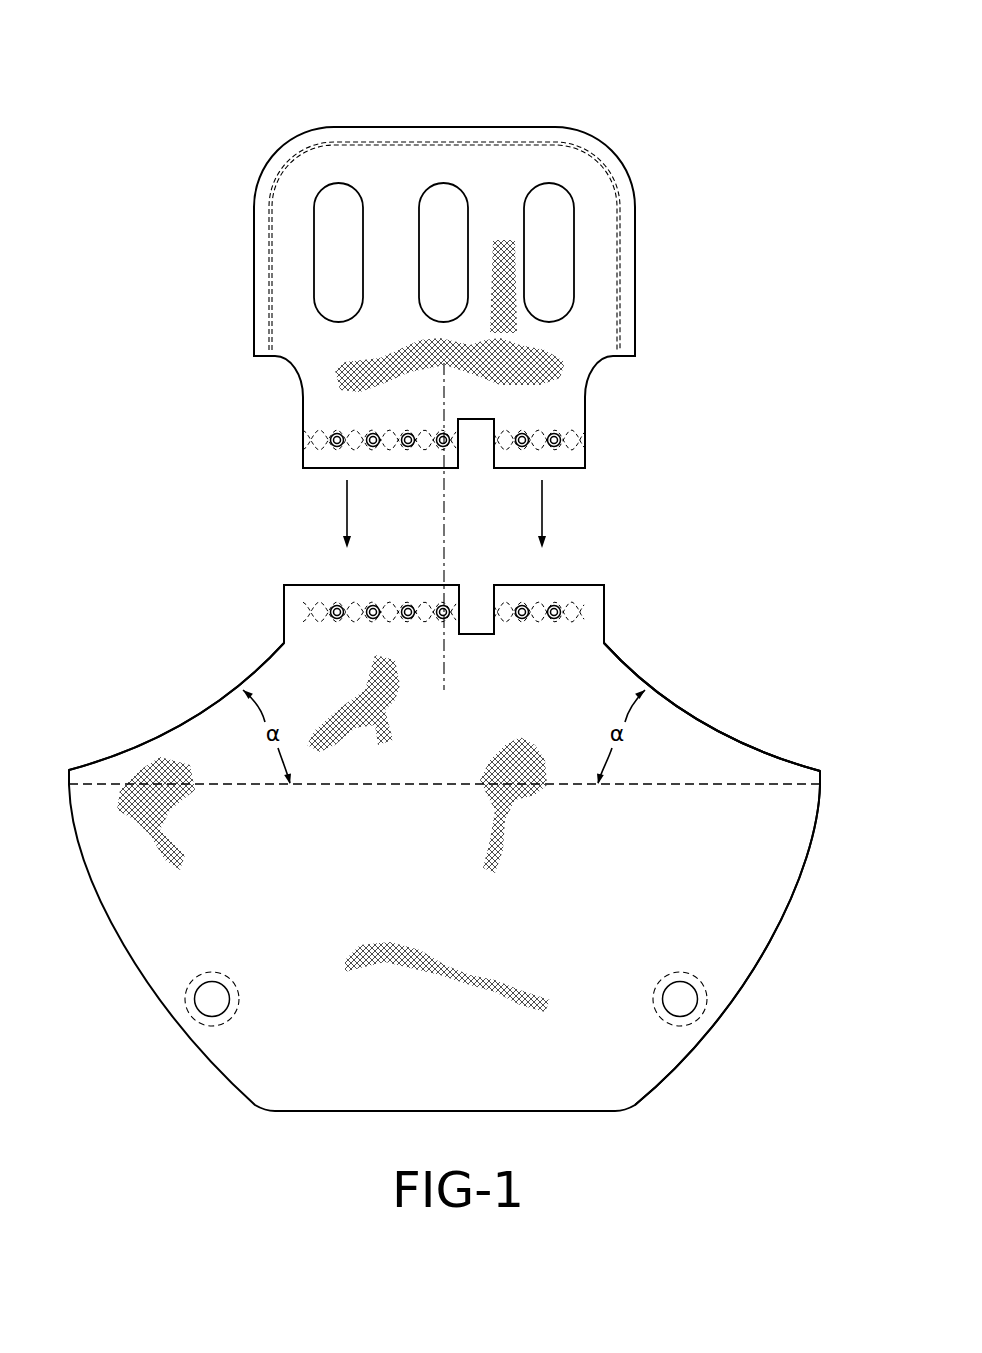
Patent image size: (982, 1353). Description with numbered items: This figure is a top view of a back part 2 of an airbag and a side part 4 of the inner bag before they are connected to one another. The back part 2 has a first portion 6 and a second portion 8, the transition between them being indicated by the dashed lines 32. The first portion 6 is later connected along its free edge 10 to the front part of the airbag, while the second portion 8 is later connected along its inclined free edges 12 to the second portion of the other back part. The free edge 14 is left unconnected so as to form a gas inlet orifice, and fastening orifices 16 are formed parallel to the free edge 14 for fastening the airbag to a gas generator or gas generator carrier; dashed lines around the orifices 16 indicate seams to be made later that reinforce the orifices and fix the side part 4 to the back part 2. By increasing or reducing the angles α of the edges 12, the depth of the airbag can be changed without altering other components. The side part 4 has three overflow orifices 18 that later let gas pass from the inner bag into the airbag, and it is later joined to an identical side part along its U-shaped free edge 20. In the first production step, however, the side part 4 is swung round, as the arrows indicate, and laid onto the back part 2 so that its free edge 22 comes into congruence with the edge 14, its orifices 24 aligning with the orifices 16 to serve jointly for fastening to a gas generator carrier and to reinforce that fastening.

The back part 2 is at (805, 905).
The side part 4 is at (548, 120).
The first portion 6 is at (577, 1078).
The second portion 8 is at (724, 757).
The free edge 10 is at (700, 1050).
The free edges 12 is at (642, 702).
The free edge 14 is at (563, 585).
The fastening orifices 16 is at (373, 610).
The overflow orifices 18 is at (548, 200).
The U-shaped free edge 20 is at (610, 152).
The free edge 22 is at (557, 468).
The orifices 24 is at (373, 447).
The dashed lines 32 is at (100, 784).